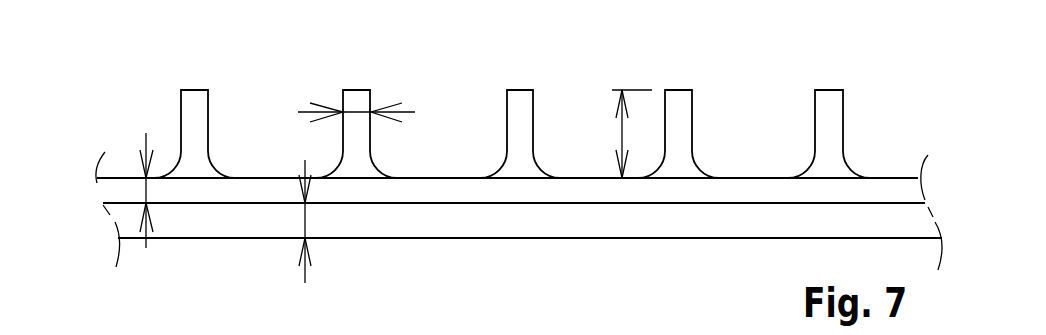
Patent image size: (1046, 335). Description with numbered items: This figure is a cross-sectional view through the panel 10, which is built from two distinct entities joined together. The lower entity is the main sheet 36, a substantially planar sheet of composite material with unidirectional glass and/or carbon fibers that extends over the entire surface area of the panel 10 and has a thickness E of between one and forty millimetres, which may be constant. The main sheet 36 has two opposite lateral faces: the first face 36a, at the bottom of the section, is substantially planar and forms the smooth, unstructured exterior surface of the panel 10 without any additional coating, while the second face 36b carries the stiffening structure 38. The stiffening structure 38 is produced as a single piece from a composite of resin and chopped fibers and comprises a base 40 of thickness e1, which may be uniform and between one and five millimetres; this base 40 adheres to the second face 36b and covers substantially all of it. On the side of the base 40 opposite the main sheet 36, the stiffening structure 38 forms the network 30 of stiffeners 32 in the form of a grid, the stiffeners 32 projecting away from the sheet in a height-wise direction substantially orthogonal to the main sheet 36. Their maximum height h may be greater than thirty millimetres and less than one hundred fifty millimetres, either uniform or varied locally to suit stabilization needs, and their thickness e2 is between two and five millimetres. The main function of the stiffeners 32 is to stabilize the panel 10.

The panel 10 is at (84, 132).
The network of stiffeners 30 is at (512, 89).
The stiffeners 32 is at (197, 103).
The main sheet 36 is at (522, 257).
The first face 36a is at (587, 240).
The second face 36b is at (567, 201).
The stiffening structure 38 is at (908, 158).
The base 40 is at (903, 190).
The thickness of the base e1 is at (145, 190).
The thickness of the stiffeners e2 is at (355, 117).
The maximum height of the stiffeners h is at (620, 133).
The thickness of the main sheet E is at (300, 220).